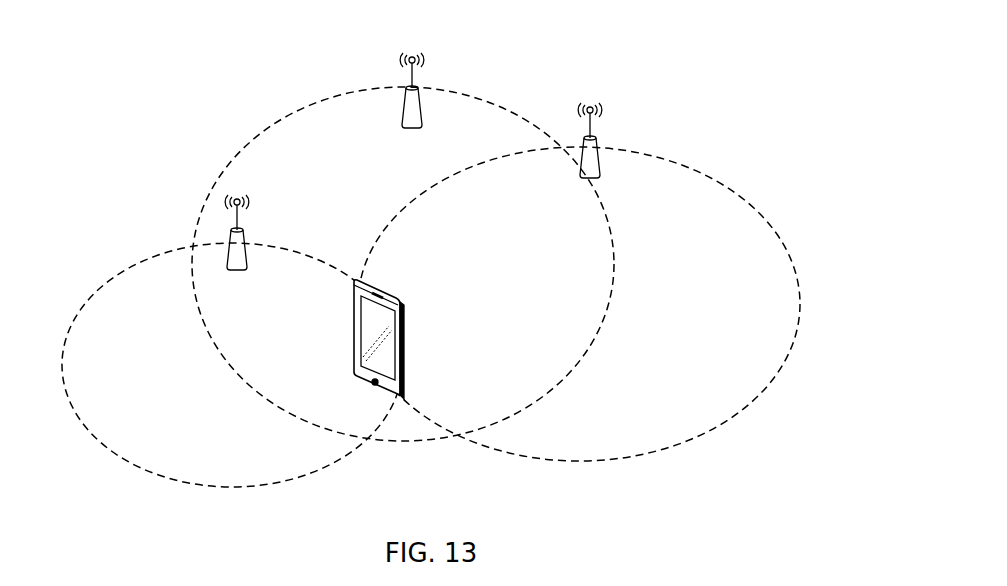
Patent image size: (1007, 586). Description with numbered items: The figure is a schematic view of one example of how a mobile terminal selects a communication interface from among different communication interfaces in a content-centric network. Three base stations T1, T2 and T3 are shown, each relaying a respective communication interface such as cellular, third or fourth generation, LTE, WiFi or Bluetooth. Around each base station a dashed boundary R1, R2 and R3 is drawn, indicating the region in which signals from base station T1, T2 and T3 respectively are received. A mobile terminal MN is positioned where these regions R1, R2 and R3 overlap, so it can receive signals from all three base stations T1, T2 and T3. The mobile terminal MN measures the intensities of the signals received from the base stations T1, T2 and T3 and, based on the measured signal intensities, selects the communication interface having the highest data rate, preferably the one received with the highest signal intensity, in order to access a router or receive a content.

The coverage range of transmitter T1 R1 is at (403, 264).
The coverage range of transmitter T2 R2 is at (232, 365).
The coverage range of transmitter T3 R3 is at (579, 304).
The base station T1 is at (411, 75).
The base station T2 is at (236, 250).
The base station T3 is at (589, 126).
The mobile terminal MN is at (400, 339).